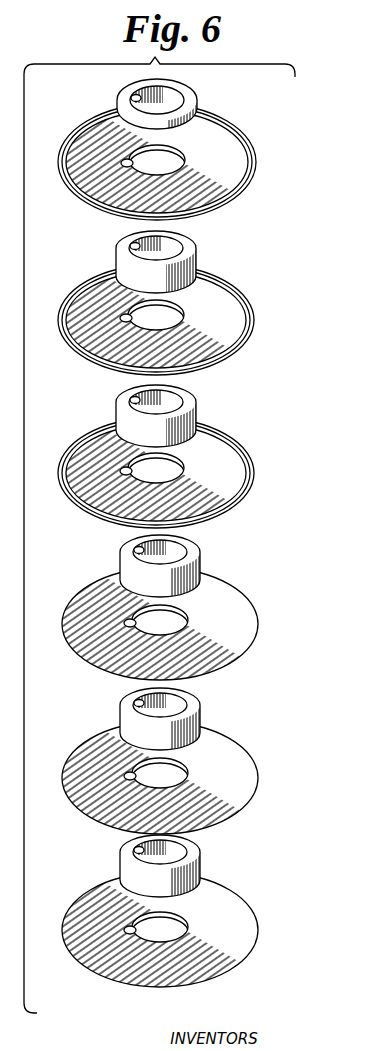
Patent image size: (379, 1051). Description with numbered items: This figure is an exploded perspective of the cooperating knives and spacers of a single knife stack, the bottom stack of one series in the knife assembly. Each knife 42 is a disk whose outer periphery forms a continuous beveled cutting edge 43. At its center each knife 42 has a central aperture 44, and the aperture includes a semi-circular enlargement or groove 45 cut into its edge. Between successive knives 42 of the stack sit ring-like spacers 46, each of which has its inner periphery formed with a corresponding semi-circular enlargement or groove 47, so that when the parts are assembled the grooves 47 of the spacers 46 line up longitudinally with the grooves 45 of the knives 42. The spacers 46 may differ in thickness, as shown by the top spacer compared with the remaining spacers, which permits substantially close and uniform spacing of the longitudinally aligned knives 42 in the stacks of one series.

The knife 42 is at (219, 136).
The beveled cutting edge 43 is at (253, 166).
The central aperture 44 is at (181, 156).
The semi-circular enlargement or groove 45 is at (125, 161).
The ring-like spacer 46 is at (191, 98).
The semi-circular enlargement or groove 47 is at (135, 97).